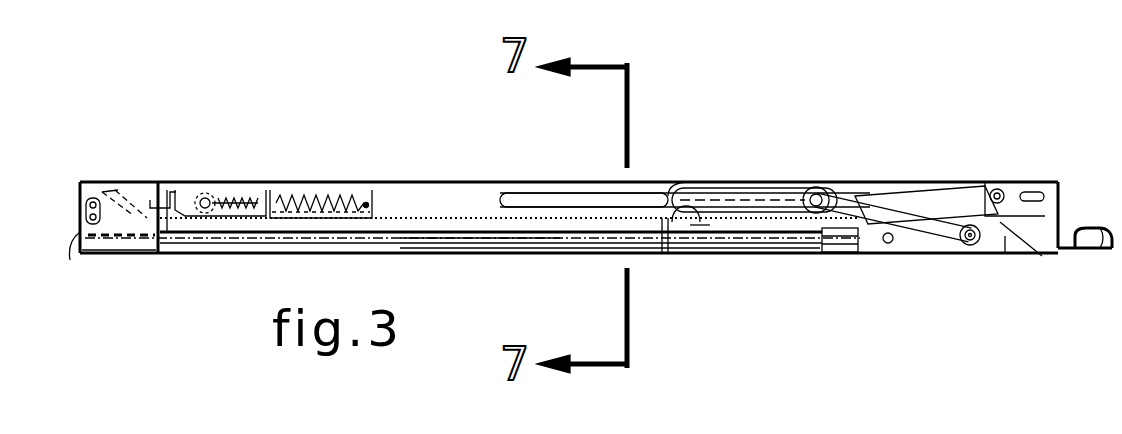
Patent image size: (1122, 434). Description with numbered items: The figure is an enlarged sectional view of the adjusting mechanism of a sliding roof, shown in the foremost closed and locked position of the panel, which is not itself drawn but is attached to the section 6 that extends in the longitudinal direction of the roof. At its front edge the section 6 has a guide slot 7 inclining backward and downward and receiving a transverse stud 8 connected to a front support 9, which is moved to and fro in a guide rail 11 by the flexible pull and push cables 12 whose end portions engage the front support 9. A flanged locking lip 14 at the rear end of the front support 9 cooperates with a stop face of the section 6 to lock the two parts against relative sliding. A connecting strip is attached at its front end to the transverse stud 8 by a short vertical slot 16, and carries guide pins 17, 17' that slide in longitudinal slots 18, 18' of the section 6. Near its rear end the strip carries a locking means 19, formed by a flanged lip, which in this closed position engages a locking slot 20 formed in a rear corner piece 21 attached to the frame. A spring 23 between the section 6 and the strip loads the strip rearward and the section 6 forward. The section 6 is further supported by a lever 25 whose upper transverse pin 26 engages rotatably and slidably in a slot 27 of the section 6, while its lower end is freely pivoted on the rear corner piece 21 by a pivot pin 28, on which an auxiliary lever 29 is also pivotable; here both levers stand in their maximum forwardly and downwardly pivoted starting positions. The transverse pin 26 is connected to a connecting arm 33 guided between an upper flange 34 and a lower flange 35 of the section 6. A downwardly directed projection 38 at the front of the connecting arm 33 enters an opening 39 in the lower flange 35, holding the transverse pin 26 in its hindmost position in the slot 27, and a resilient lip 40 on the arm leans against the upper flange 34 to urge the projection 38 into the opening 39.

The section 6 is at (318, 182).
The guide slot 7 is at (115, 186).
The transverse stud 8 is at (90, 195).
The front support 9 is at (118, 262).
The guide rail 11 is at (552, 262).
The pull and push cables 12 is at (465, 258).
The locking lip 14 is at (152, 200).
The vertical slot 16 is at (72, 262).
The guide pin 17 is at (988, 151).
The guide pin 17' is at (220, 158).
The longitudinal slot 18 is at (1033, 150).
The longitudinal slot 18' is at (253, 154).
The locking means 19 is at (1040, 216).
The locking slot 20 is at (1027, 255).
The rear corner piece 21 is at (1010, 258).
The spring 23 is at (348, 192).
The lever 25 is at (860, 192).
The transverse pin 26 is at (822, 186).
The slot 27 is at (525, 192).
The pivot pin 28 is at (965, 255).
The auxiliary lever 29 is at (905, 255).
The connecting arm 33 is at (774, 186).
The upper flange 34 is at (750, 186).
The lower flange 35 is at (578, 205).
The projection 38 is at (690, 258).
The opening 39 is at (662, 258).
The resilient lip 40 is at (680, 182).